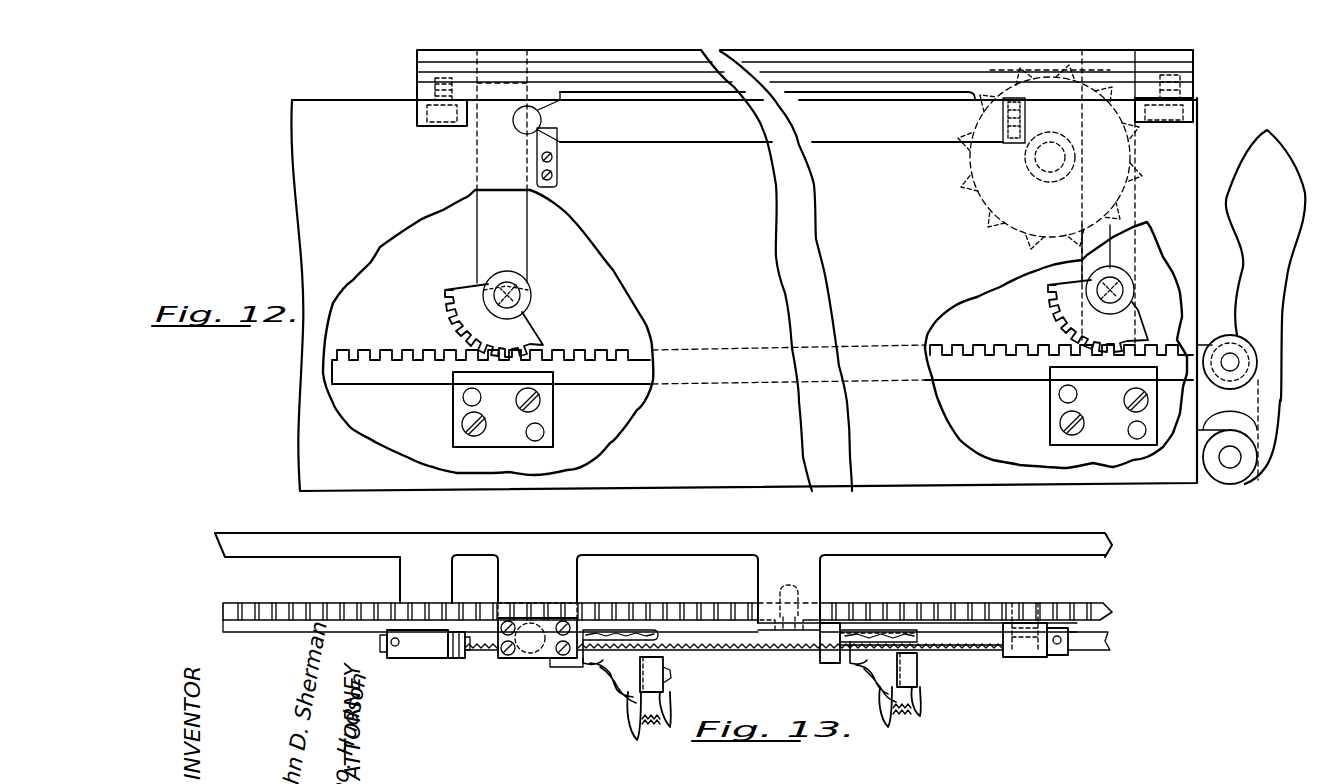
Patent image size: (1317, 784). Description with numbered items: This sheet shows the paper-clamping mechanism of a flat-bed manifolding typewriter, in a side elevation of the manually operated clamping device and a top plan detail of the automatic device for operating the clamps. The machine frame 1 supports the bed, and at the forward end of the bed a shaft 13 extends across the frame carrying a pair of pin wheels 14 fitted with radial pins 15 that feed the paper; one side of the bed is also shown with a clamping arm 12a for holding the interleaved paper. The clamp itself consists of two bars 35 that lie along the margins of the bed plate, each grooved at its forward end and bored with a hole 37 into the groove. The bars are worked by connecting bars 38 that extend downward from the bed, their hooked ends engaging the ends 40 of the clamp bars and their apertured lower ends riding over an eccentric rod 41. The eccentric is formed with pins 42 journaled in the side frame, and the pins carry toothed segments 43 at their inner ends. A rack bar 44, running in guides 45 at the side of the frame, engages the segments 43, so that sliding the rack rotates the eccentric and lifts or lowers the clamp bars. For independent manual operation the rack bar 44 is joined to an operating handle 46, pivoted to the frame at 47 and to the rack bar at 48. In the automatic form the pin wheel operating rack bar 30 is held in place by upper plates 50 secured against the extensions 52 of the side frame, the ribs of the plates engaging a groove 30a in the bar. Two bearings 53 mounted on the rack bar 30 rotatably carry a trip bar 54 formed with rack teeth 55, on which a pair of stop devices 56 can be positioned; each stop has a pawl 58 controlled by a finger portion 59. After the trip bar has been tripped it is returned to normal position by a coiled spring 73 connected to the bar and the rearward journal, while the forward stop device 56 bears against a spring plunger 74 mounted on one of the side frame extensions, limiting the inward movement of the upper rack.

In FIG. 12, the machine frame 1 is at (1180, 158).
In FIG. 13, the machine frame 1 is at (1110, 540).
In FIG. 12, the clamping arm 12a is at (665, 126).
In FIG. 12, the shaft 13 is at (1000, 195).
In FIG. 12, the pin wheel 14 is at (990, 228).
In FIG. 12, the radial pin 15 is at (1110, 75).
In FIG. 13, the rack bar 30 is at (942, 603).
In FIG. 13, the groove 30a is at (866, 622).
In FIG. 12, the clamp bar 35 is at (580, 57).
In FIG. 12, the hole 37 is at (1010, 60).
In FIG. 12, the connecting bar 38 is at (545, 242).
In FIG. 12, the clamp bar end 40 is at (490, 63).
In FIG. 12, the eccentric rod 41 is at (492, 290).
In FIG. 12, the pin 42 is at (522, 290).
In FIG. 12, the toothed segment 43 is at (522, 332).
In FIG. 12, the rack bar 44 is at (588, 357).
In FIG. 12, the guide 45 is at (550, 405).
In FIG. 12, the operating handle 46 is at (1280, 410).
In FIG. 12, the frame pivot 47 is at (1228, 472).
In FIG. 12, the rack bar pivot 48 is at (1235, 360).
In FIG. 13, the upper plate 50 is at (768, 630).
In FIG. 13, the extension 52 is at (800, 573).
In FIG. 13, the bearing 53 is at (433, 652).
In FIG. 13, the trip bar 54 is at (947, 637).
In FIG. 13, the rack teeth 55 is at (702, 652).
In FIG. 13, the stop device 56 is at (588, 670).
In FIG. 13, the pawl 58 is at (850, 656).
In FIG. 13, the finger portion 59 is at (634, 730).
In FIG. 13, the coiled spring 73 is at (456, 662).
In FIG. 13, the spring plunger 74 is at (531, 646).